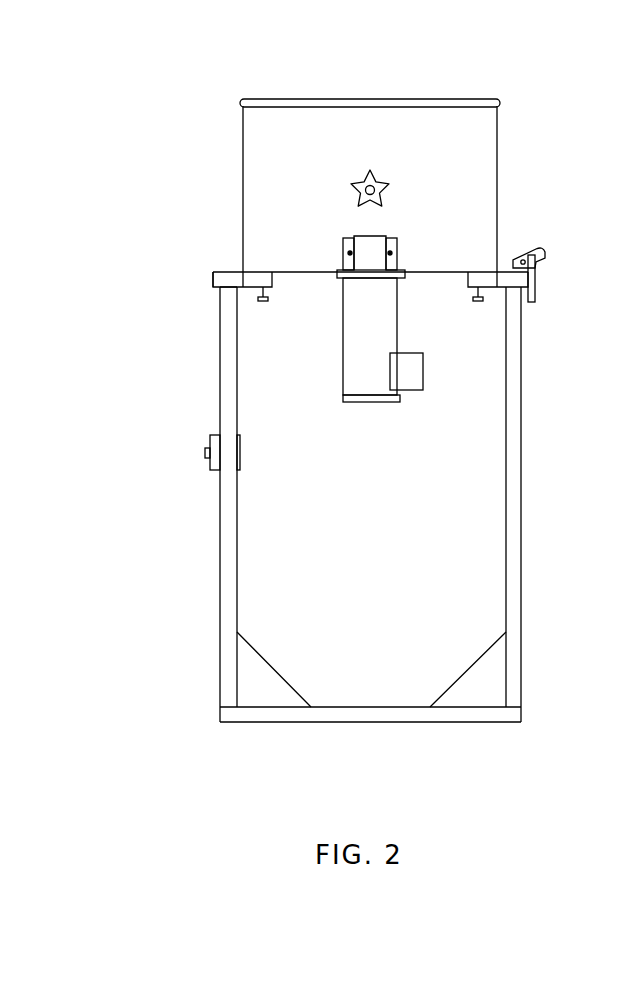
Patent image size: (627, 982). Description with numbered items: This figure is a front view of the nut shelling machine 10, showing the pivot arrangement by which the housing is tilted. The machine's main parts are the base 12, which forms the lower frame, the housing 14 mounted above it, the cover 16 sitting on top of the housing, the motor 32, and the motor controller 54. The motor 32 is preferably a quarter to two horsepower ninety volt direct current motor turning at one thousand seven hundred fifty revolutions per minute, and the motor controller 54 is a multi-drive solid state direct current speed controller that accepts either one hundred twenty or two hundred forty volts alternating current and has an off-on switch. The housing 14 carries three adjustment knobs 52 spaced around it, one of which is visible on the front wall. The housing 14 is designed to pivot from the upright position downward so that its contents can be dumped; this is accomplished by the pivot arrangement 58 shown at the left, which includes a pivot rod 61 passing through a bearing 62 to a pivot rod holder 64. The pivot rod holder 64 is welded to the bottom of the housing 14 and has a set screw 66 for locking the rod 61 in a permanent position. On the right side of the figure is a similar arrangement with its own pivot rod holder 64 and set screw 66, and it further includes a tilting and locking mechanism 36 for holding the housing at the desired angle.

The nut shelling machine 10 is at (530, 126).
The base 12 is at (521, 498).
The housing 14 is at (243, 143).
The cover 16 is at (500, 100).
The motor 32 is at (345, 345).
The tilting and locking mechanism 36 is at (546, 276).
The adjustment knob 52 is at (388, 180).
The motor controller 54 is at (215, 470).
The pivot arrangement 58 is at (216, 296).
The pivot rod 61 is at (212, 276).
The bearing 62 is at (227, 272).
The pivot rod holder 64 is at (272, 283).
The set screw 66 is at (263, 302).